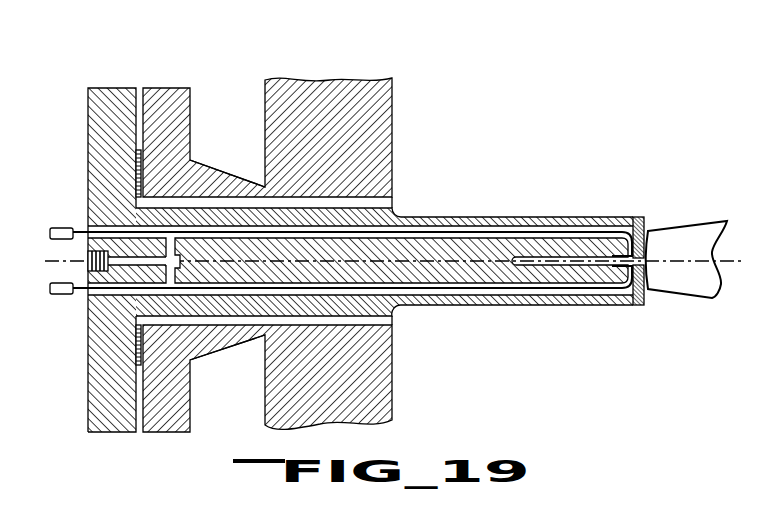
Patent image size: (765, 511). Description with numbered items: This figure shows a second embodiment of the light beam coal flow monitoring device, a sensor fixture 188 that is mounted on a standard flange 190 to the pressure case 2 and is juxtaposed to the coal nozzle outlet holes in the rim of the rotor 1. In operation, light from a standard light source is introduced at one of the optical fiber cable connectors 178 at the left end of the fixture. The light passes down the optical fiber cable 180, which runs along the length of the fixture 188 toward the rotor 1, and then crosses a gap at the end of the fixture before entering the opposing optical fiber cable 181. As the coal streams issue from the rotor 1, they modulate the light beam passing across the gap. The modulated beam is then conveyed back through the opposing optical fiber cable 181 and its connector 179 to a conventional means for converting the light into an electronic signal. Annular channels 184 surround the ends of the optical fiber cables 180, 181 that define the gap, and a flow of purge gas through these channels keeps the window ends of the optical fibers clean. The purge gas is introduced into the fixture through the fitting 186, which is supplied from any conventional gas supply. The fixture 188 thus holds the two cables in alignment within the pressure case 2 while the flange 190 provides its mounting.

The rotor 1 is at (693, 228).
The pressure case 2 is at (266, 112).
The optical fiber cable connector 178 is at (61, 228).
The connector 179 is at (58, 295).
The optical fiber cable 180 is at (504, 237).
The optical fiber cable 181 is at (534, 290).
The annular channels 184 is at (636, 219).
The fitting 186 is at (101, 251).
The sensor fixture 188 is at (435, 216).
The standard flange 190 is at (224, 180).